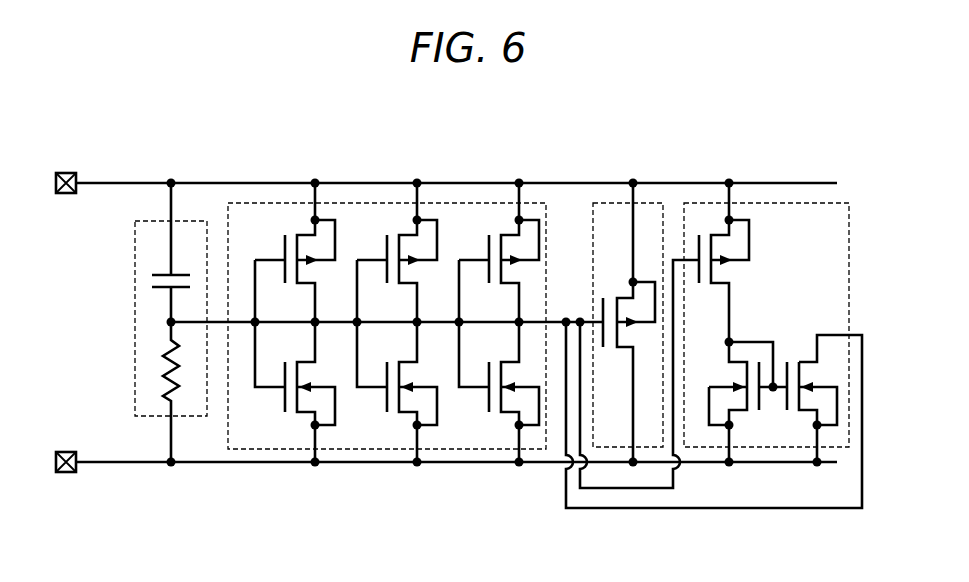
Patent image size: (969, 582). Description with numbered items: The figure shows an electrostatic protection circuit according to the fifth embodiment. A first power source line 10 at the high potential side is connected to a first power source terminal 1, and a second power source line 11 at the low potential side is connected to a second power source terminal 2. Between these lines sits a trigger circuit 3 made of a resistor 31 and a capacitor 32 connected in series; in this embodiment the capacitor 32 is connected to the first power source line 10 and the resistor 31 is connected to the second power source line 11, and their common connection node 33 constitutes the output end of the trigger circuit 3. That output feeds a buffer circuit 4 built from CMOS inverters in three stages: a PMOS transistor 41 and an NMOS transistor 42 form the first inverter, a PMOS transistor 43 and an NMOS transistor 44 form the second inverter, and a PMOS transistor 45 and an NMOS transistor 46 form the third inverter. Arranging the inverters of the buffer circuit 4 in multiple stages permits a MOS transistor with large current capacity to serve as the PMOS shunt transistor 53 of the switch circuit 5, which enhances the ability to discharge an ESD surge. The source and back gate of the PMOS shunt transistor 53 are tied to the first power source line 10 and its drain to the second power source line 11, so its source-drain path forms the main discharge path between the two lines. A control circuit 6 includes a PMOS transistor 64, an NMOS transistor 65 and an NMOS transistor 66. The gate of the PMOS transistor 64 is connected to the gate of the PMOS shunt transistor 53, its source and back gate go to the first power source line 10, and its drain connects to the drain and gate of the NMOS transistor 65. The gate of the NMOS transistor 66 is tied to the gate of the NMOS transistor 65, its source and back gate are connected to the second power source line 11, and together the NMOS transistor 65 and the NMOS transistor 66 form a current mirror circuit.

The first power source terminal 1 is at (68, 173).
The second power source terminal 2 is at (68, 452).
The trigger circuit 3 is at (128, 386).
The buffer circuit 4 is at (449, 203).
The switch circuit 5 is at (645, 203).
The control circuit 6 is at (701, 203).
The first power source line 10 is at (338, 182).
The second power source line 11 is at (218, 464).
The resistor 31 is at (160, 357).
The capacitor 32 is at (150, 283).
The common connection node 33 is at (168, 322).
The PMOS transistor 41 is at (300, 223).
The NMOS transistor 42 is at (300, 425).
The PMOS transistor 43 is at (402, 223).
The NMOS transistor 44 is at (402, 425).
The PMOS transistor 45 is at (511, 218).
The NMOS transistor 46 is at (504, 425).
The PMOS shunt transistor 53 is at (617, 285).
The PMOS transistor 64 is at (740, 212).
The NMOS transistor 65 is at (744, 420).
The NMOS transistor 66 is at (800, 420).